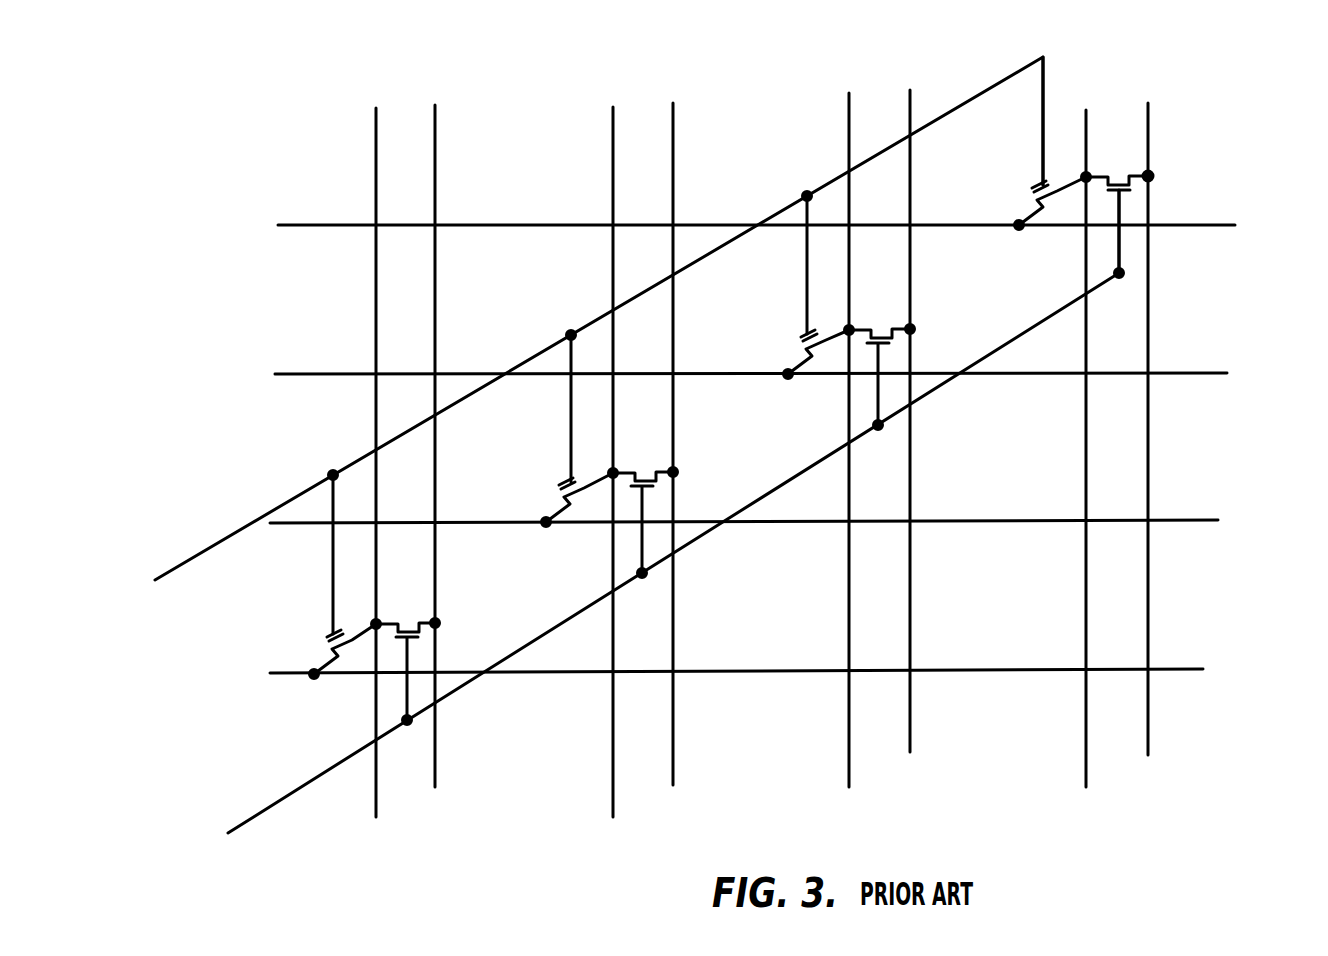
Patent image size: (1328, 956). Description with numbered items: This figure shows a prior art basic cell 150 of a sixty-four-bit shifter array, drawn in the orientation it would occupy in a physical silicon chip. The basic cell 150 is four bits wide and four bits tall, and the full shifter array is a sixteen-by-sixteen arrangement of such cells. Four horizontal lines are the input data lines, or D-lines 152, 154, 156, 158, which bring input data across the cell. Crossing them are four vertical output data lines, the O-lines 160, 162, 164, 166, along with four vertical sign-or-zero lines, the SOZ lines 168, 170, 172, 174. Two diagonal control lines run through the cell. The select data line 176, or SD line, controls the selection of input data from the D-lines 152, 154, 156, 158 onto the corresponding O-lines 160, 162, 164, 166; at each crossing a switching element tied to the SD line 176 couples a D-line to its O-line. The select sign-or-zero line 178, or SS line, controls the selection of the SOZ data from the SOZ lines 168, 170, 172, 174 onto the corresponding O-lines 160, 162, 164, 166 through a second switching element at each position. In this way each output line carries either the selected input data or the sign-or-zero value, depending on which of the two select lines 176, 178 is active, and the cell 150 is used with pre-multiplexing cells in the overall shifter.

The basic cell 150 is at (1222, 79).
The input data line 152 is at (1190, 225).
The input data line 154 is at (1178, 373).
The input data line 156 is at (1177, 520).
The input data line 158 is at (1172, 669).
The output data line 160 is at (1087, 743).
The output data line 162 is at (850, 744).
The output data line 164 is at (614, 743).
The output data line 166 is at (377, 771).
The sign-or-zero line 168 is at (1149, 739).
The sign-or-zero line 170 is at (911, 738).
The sign-or-zero line 172 is at (674, 741).
The sign-or-zero line 174 is at (436, 743).
The select data line 176 is at (208, 548).
The select sign-or-zero line 178 is at (280, 800).